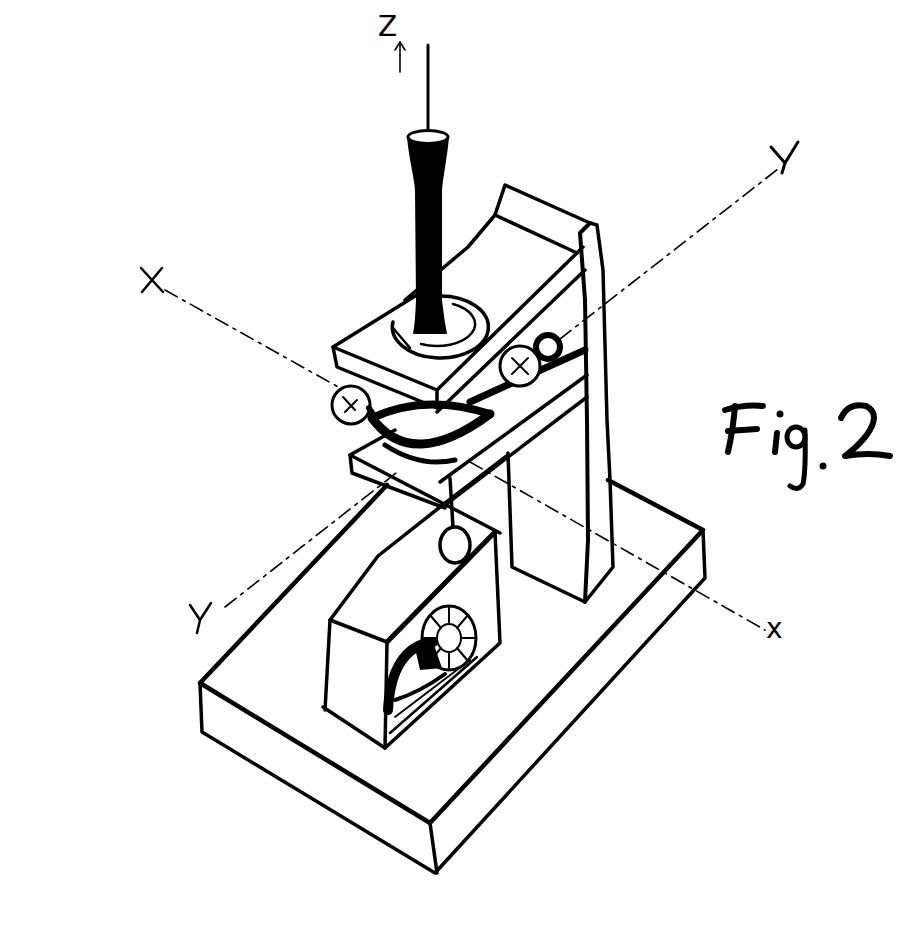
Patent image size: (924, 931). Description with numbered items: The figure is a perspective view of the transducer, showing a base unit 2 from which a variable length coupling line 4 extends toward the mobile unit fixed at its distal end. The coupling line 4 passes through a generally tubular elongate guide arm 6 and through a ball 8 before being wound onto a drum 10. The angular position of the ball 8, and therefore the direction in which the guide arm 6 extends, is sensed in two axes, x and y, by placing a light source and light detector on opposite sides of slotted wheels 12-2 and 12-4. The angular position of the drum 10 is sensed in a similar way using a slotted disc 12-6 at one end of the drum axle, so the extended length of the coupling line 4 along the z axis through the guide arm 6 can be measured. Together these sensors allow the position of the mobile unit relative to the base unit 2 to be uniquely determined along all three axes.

The base unit 2 is at (613, 487).
The coupling line 4 is at (433, 53).
The guide arm 6 is at (442, 205).
The ball 8 is at (403, 308).
The drum 10 is at (490, 633).
The slotted wheel 12-2 is at (570, 348).
The slotted wheel 12-4 is at (333, 414).
The slotted disc 12-6 is at (472, 686).